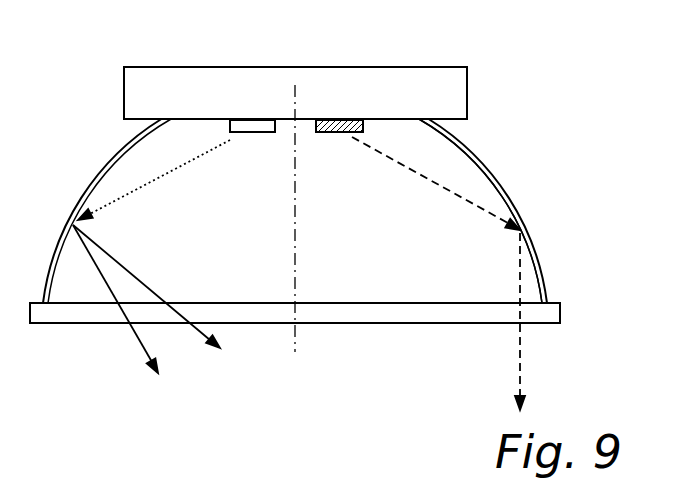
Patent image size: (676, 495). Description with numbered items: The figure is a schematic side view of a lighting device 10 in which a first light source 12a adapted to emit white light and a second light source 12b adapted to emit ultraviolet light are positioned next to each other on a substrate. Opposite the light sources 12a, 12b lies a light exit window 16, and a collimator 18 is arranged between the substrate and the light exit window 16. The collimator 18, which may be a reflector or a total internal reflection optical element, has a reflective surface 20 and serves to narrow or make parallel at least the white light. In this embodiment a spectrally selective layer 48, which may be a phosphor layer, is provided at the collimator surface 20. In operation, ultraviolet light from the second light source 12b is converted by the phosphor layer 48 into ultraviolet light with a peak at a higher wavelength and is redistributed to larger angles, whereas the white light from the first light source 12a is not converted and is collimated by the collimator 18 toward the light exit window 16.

The lighting device 10 is at (604, 95).
The first light source 12a is at (330, 122).
The second light source 12b is at (247, 122).
The light exit window 16 is at (560, 313).
The collimator 18 is at (540, 263).
The reflective surface 20 is at (486, 166).
The spectrally selective layer 48 is at (447, 140).